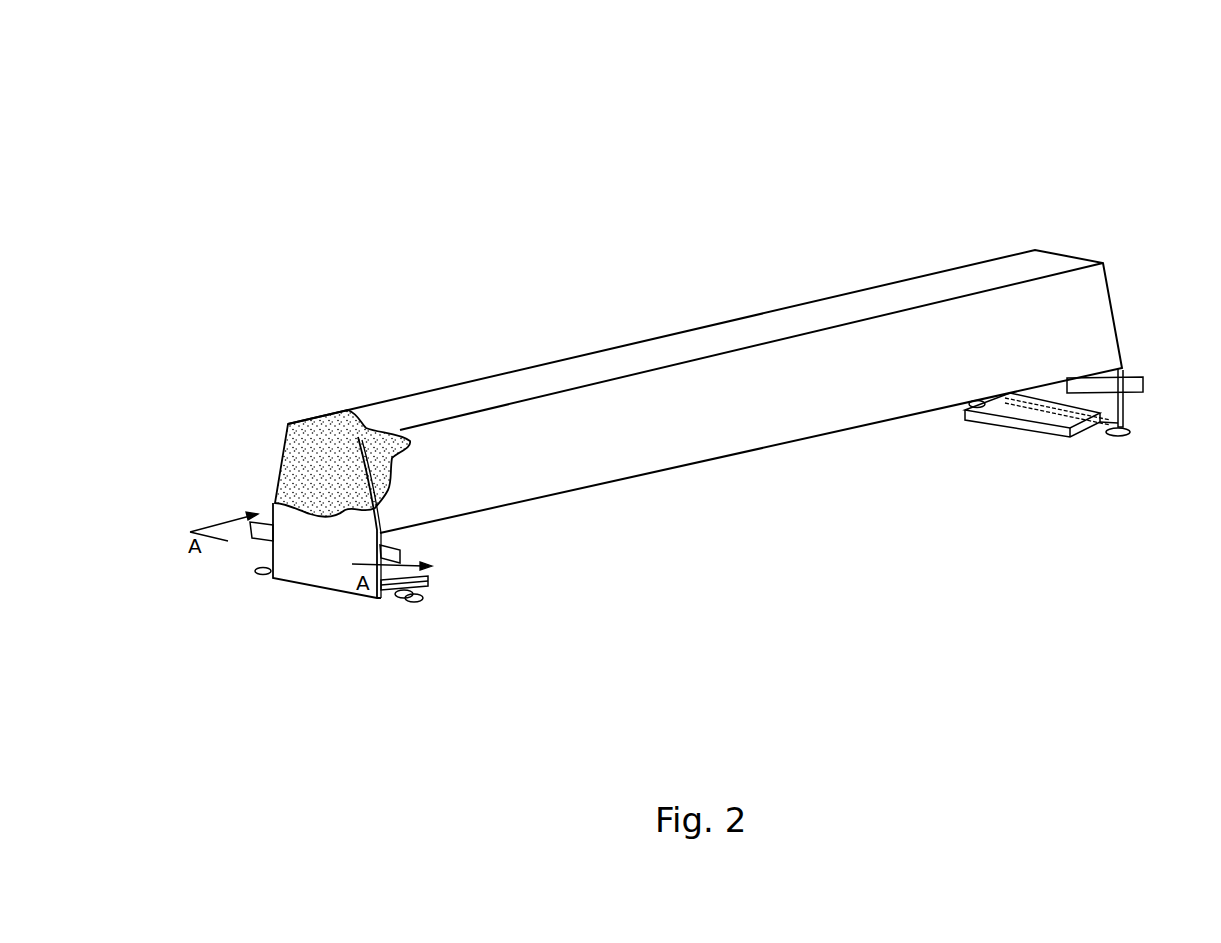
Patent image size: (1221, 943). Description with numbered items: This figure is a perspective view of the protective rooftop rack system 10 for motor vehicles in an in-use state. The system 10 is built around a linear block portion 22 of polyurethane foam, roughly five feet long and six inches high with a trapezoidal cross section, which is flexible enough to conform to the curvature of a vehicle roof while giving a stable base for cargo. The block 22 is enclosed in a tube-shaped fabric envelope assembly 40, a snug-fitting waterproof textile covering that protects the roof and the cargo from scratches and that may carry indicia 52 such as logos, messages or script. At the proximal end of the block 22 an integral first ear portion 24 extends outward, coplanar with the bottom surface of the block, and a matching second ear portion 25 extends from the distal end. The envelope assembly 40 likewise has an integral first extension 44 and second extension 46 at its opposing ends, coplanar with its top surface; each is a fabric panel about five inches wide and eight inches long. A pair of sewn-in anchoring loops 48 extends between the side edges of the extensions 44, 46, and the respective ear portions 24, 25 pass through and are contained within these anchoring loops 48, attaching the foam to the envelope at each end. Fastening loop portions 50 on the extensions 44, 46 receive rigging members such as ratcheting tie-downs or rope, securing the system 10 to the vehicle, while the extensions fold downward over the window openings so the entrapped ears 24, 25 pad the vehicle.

The protective rooftop rack system 10 is at (224, 128).
The linear block portion 22 is at (318, 447).
The first ear portion 24 is at (428, 587).
The second ear portion 25 is at (1053, 420).
The fabric envelope assembly 40 is at (735, 296).
The first extension 44 is at (307, 568).
The second extension 46 is at (1040, 393).
The anchoring loops 48 is at (1073, 415).
The fastening loop portions 50 is at (388, 556).
The indicia 52 is at (657, 413).